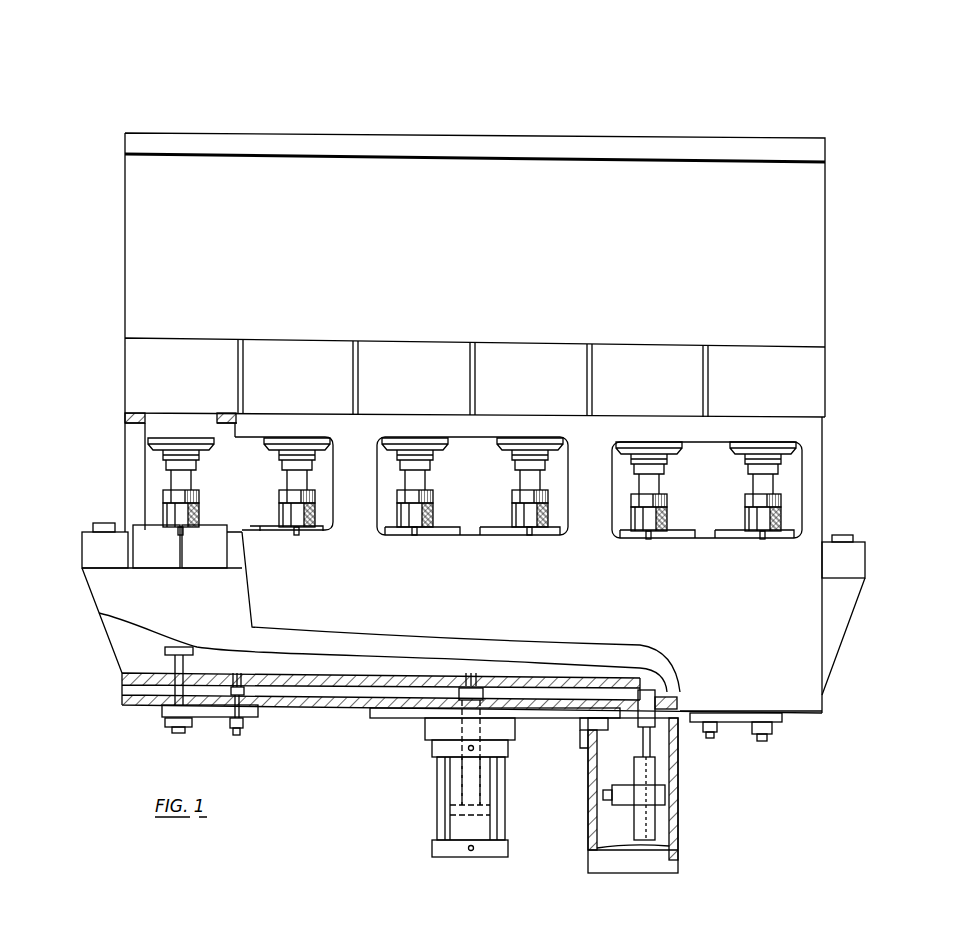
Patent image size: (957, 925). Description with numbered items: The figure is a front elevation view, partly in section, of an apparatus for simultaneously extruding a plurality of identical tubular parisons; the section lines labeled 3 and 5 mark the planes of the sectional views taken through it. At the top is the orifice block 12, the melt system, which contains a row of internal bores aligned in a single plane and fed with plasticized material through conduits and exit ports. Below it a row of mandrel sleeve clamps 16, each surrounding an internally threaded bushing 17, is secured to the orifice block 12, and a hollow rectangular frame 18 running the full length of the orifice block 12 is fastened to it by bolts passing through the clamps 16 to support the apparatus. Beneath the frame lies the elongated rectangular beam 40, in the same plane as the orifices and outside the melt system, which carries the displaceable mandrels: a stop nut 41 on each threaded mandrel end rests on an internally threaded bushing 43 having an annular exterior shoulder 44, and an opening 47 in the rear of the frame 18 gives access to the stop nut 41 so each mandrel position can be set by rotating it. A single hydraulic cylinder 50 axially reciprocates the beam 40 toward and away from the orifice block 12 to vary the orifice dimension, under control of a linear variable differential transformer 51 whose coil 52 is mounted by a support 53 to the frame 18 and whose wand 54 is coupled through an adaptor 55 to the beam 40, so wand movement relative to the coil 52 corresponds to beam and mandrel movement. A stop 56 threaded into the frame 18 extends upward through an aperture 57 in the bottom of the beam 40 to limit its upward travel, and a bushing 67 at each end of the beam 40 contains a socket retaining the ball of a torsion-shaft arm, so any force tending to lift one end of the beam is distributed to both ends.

The section line 3- 3 is at (165, 482).
The section line 5- 5 is at (283, 751).
The orifice block 12 is at (820, 185).
The mandrel sleeve clamp 16 is at (303, 387).
The internally threaded bushing 17 is at (265, 441).
The hollow rectangular frame 18 is at (750, 627).
The elongated rectangular beam 40 is at (100, 602).
The stop nut 41 is at (279, 495).
The internally threaded bushing 43 is at (279, 513).
The annular exterior shoulder 44 is at (104, 523).
The opening 47 is at (323, 523).
The hydraulic cylinder 50 is at (435, 843).
The linear variable differential transformer 51 is at (660, 858).
The coil 52 is at (647, 820).
The support 53 is at (612, 778).
The wand 54 is at (650, 745).
The adaptor 55 is at (655, 715).
The stop 56 is at (167, 648).
The aperture 57 is at (185, 673).
The bushing 67 is at (85, 553).